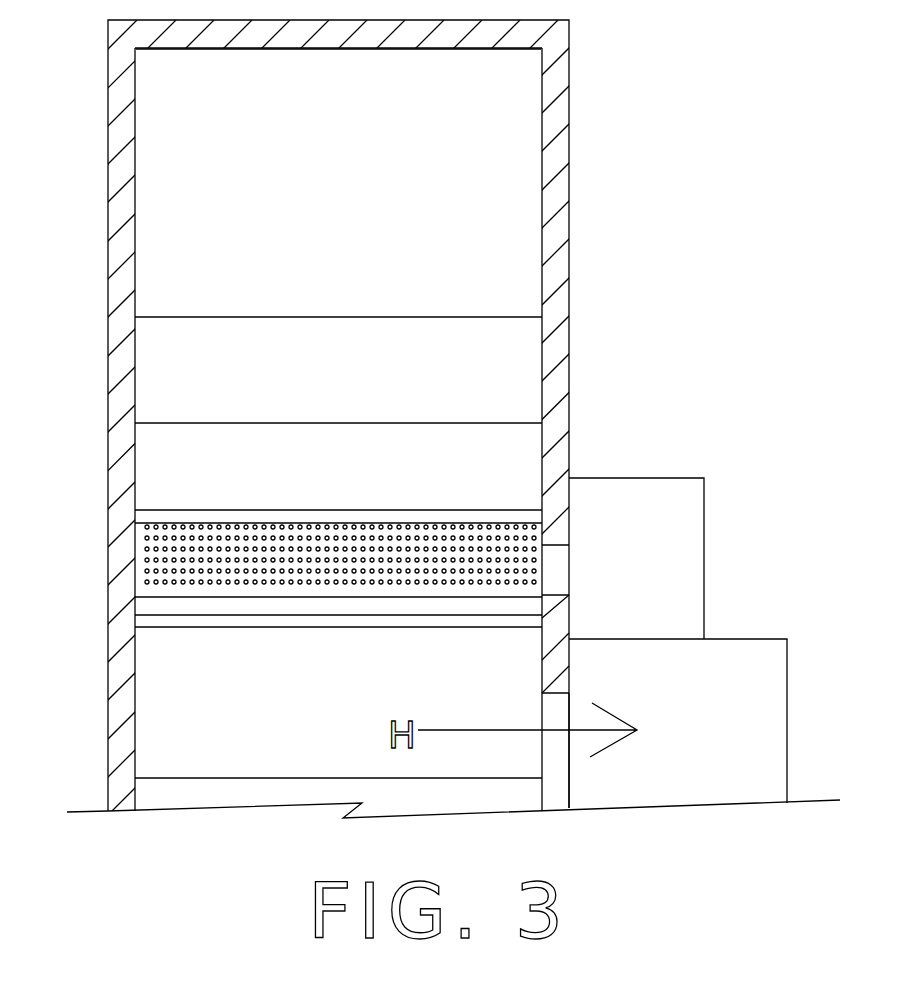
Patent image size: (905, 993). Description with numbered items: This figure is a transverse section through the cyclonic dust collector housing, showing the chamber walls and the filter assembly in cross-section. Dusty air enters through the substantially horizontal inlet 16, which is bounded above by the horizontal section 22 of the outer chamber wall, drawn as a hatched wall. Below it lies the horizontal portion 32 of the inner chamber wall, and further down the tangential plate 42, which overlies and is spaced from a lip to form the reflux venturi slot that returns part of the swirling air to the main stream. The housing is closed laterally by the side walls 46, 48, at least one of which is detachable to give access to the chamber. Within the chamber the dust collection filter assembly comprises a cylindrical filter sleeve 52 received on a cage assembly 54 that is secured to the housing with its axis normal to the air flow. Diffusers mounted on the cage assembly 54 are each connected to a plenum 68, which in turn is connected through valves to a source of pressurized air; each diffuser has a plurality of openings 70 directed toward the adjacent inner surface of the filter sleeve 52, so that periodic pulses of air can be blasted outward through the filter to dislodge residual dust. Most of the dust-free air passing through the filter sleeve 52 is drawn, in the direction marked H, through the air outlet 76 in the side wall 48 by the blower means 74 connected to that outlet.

The horizontal inlet 16 is at (313, 196).
The horizontal section 22 is at (308, 48).
The horizontal portion 32 is at (310, 317).
The tangential plate 42 is at (325, 407).
The side wall 46 is at (107, 377).
The side wall 48 is at (569, 402).
The cylindrical filter sleeve 52 is at (350, 492).
The cage assembly 54 is at (147, 597).
The plenum 68 is at (663, 478).
The openings 70 is at (147, 570).
The blower means 74 is at (727, 639).
The air outlet 76 is at (542, 710).